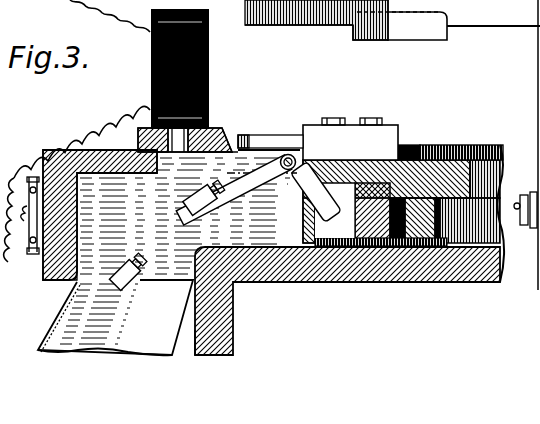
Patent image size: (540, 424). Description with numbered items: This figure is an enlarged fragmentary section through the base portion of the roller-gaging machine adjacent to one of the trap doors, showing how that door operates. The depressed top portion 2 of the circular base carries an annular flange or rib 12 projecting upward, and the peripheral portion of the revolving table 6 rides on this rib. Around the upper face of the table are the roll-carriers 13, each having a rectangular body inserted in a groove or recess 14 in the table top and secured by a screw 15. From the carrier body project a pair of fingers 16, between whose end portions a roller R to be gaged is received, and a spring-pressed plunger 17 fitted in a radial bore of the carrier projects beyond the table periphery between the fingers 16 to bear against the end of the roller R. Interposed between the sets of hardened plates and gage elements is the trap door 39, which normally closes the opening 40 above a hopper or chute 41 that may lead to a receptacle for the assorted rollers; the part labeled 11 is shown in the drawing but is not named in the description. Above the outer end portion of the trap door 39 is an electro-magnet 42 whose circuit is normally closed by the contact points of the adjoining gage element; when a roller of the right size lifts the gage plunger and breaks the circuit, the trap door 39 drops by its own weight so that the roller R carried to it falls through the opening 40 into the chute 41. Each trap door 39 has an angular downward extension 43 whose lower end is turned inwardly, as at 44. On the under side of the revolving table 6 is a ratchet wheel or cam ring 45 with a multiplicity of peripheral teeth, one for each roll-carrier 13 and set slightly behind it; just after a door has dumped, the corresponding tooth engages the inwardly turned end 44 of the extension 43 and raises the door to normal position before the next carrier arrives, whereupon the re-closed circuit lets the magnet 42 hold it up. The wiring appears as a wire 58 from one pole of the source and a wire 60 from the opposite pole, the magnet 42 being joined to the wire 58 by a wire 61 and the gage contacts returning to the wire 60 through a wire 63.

The top portion 2 is at (340, 280).
The revolving table 6 is at (470, 185).
The post 11 is at (222, 345).
The annular flange or rib 12 is at (440, 230).
The roll-carrier 13 is at (380, 147).
The groove or recess 14 is at (450, 172).
The screw 15 is at (343, 125).
The finger 16 is at (336, 98).
The spring-pressed plunger 17 is at (287, 272).
The trap door 39 is at (252, 192).
The opening 40 is at (283, 142).
The hopper or chute 41 is at (172, 312).
The electro-magnet 42 is at (207, 85).
The angular downward extension 43 is at (310, 188).
The inwardly turned lower end portion 44 is at (352, 247).
The ratchet wheel or cam ring 45 is at (385, 229).
The wire 58 is at (55, 178).
The wire 60 is at (28, 248).
The wire 61 is at (88, 113).
The wire 63 is at (14, 276).
The roller R is at (120, 268).